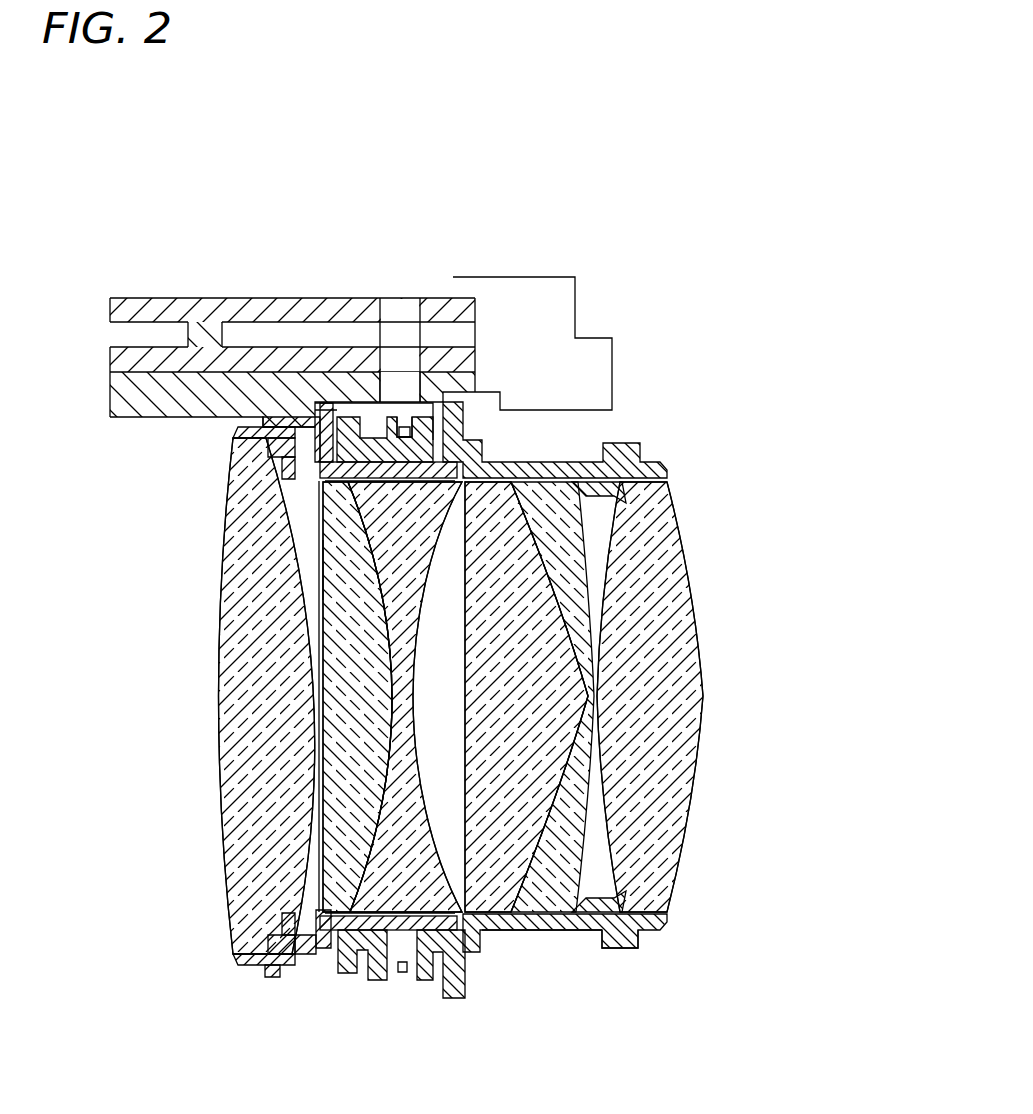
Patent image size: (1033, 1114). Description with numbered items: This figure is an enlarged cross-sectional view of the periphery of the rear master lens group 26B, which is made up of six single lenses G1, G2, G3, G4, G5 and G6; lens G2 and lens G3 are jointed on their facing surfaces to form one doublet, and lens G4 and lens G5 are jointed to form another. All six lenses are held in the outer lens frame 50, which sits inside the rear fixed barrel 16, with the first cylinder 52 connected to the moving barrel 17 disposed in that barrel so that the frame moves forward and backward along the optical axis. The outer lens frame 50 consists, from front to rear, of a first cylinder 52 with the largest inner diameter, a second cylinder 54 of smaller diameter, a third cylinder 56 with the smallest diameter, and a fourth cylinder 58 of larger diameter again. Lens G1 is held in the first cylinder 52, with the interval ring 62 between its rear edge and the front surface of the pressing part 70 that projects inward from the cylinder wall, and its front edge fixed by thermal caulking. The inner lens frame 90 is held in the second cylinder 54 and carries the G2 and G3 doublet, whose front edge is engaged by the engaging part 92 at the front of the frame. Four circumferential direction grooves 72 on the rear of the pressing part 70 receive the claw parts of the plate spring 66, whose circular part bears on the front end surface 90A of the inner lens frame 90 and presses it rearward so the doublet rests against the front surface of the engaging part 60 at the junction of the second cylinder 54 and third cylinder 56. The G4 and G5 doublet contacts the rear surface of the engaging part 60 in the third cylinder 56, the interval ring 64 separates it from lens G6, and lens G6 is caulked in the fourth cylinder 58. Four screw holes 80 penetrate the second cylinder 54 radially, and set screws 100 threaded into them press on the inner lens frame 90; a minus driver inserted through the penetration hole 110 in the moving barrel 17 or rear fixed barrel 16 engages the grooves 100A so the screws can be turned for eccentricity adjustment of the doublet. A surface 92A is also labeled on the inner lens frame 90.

The rear fixed barrel 16 is at (205, 330).
The moving barrel 17 is at (152, 420).
The rear master lens group 26B is at (762, 560).
The outer lens frame 50 is at (666, 923).
The first cylinder 52 is at (233, 972).
The second cylinder 54 is at (465, 1002).
The third cylinder 56 is at (600, 936).
The fourth cylinder 58 is at (665, 957).
The engaging part 60 is at (481, 498).
The interval ring 62 is at (278, 472).
The interval ring 64 is at (617, 490).
The plate spring 66 is at (303, 520).
The pressing part 70 is at (318, 440).
The circumferential direction grooves 72 is at (326, 456).
The screw holes 80 is at (407, 432).
The inner lens frame 90 is at (400, 481).
The front end surface 90A is at (320, 485).
The engaging part 92 is at (325, 483).
The holding surface 92A is at (330, 540).
The set screws 100 is at (377, 413).
The grooves 100A is at (401, 428).
The penetration hole 110 is at (423, 286).
The lens G1 is at (277, 707).
The lens G2 is at (412, 713).
The lens G3 is at (405, 697).
The lens G4 is at (580, 711).
The lens G5 is at (537, 529).
The lens G6 is at (637, 707).